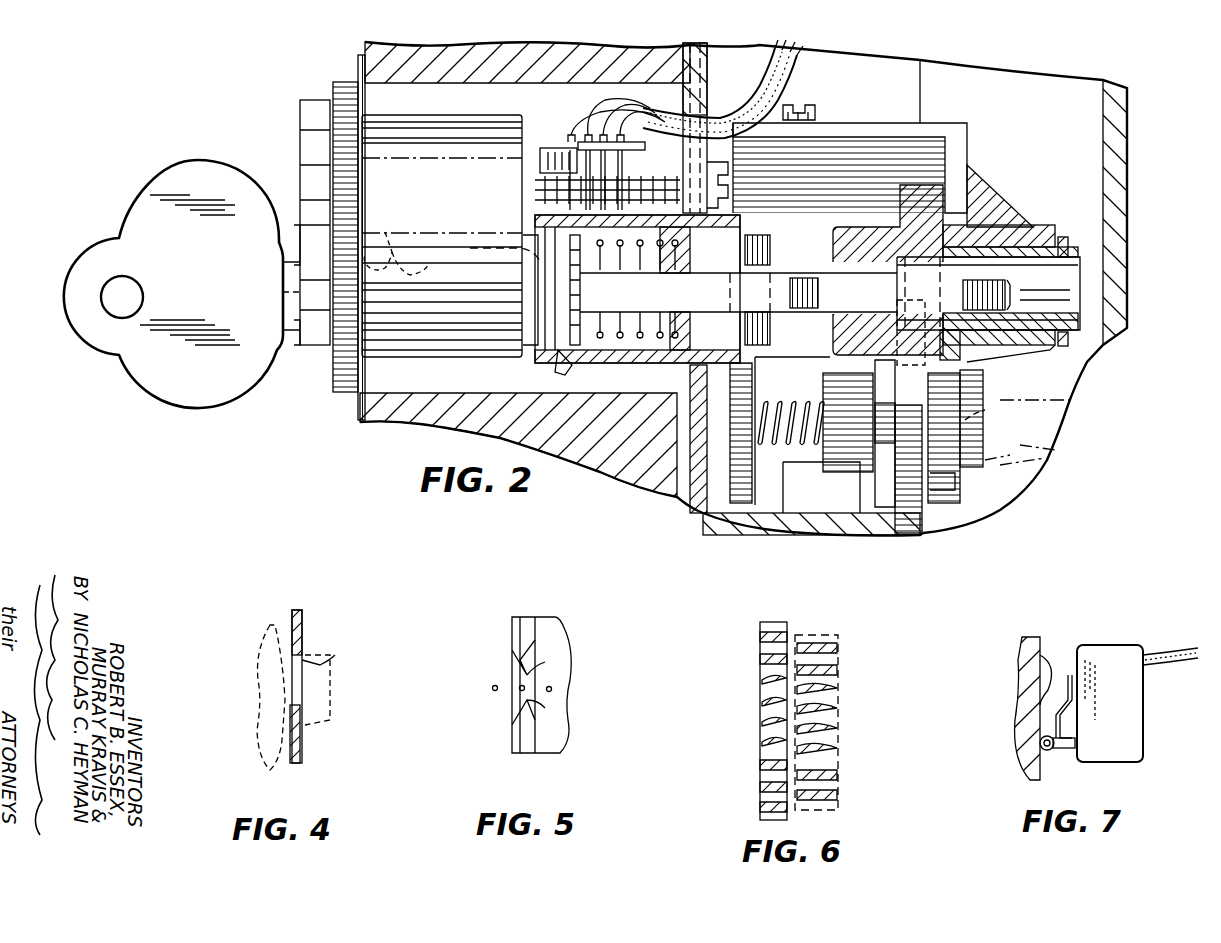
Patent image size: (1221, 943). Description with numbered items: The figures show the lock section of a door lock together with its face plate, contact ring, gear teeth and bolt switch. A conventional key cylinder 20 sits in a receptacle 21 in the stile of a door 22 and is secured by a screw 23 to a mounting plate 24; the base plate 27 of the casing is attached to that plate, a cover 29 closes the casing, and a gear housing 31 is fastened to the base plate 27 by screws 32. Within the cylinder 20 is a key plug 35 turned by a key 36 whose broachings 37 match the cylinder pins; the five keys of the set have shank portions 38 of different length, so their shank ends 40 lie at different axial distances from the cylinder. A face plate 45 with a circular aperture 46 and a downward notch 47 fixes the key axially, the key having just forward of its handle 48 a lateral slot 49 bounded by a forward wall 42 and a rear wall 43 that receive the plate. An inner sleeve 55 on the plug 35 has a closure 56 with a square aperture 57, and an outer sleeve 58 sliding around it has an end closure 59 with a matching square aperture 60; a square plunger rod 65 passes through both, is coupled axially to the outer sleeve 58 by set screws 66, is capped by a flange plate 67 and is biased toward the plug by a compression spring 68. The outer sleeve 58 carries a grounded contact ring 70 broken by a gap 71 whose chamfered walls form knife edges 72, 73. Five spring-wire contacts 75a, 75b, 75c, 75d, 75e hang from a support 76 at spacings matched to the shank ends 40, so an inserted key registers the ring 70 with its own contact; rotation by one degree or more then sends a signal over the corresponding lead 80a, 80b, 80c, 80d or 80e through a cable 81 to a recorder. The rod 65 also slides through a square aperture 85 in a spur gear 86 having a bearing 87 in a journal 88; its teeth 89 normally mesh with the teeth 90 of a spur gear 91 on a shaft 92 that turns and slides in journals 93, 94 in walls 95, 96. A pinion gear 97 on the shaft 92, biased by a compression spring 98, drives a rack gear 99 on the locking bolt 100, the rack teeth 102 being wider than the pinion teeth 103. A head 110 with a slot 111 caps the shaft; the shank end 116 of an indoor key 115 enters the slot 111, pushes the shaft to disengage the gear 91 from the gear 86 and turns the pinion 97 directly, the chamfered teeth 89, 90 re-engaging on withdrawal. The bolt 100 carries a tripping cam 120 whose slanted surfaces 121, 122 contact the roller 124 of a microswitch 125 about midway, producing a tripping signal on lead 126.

In FIG. 2, the key cylinder 20 is at (442, 200).
In FIG. 2, the receptacle 21 is at (412, 389).
In FIG. 2, the door 22 is at (400, 425).
In FIG. 2, the screw 23 is at (718, 180).
In FIG. 2, the mounting plate 24 is at (710, 62).
In FIG. 2, the base plate 27 is at (800, 68).
In FIG. 2, the cover 29 is at (1128, 190).
In FIG. 2, the gear housing 31 is at (967, 125).
In FIG. 2, the screws 32 is at (815, 112).
In FIG. 2, the key plug 35 is at (540, 360).
In FIG. 2, the key 36 is at (182, 304).
In FIG. 4, the key 36 is at (255, 738).
In FIG. 2, the broachings 37 is at (392, 235).
In FIG. 2, the shank portions 38 is at (490, 248).
In FIG. 2, the shank ends 40 is at (555, 372).
In FIG. 4, the forward wall 42 is at (302, 740).
In FIG. 4, the rear wall 43 is at (290, 765).
In FIG. 2, the face plate 45 is at (312, 137).
In FIG. 4, the face plate 45 is at (302, 630).
In FIG. 4, the circular aperture 46 is at (335, 646).
In FIG. 4, the notch 47 is at (292, 710).
In FIG. 2, the handle 48 is at (190, 190).
In FIG. 4, the handle 48 is at (258, 700).
In FIG. 2, the slot 49 is at (312, 345).
In FIG. 4, the slot 49 is at (330, 692).
In FIG. 2, the inner sleeve 55 is at (608, 363).
In FIG. 2, the closure 56 is at (693, 264).
In FIG. 2, the square aperture 57 is at (698, 330).
In FIG. 2, the outer sleeve 58 is at (655, 363).
In FIG. 5, the outer sleeve 58 is at (555, 628).
In FIG. 2, the end closure 59 is at (752, 268).
In FIG. 2, the square aperture 60 is at (760, 318).
In FIG. 2, the plunger rod 65 is at (882, 306).
In FIG. 2, the set screws 66 is at (770, 240).
In FIG. 2, the flange plate 67 is at (545, 284).
In FIG. 2, the compression spring 68 is at (635, 363).
In FIG. 2, the contact ring 70 is at (545, 228).
In FIG. 5, the contact ring 70 is at (527, 620).
In FIG. 5, the gap 71 is at (512, 672).
In FIG. 5, the knife edge 72 is at (551, 656).
In FIG. 5, the knife edge 73 is at (541, 715).
In FIG. 2, the fixed electrical contact 75a is at (540, 185).
In FIG. 5, the fixed electrical contact 75a is at (492, 688).
In FIG. 2, the fixed electrical contact 75b is at (555, 213).
In FIG. 5, the fixed electrical contact 75b is at (519, 690).
In FIG. 2, the fixed electrical contact 75c is at (608, 289).
In FIG. 5, the fixed electrical contact 75c is at (553, 690).
In FIG. 2, the fixed electrical contact 75d is at (643, 289).
In FIG. 2, the fixed electrical contact 75e is at (681, 289).
In FIG. 2, the support 76 is at (538, 167).
In FIG. 2, the lead 80a is at (572, 115).
In FIG. 2, the lead 80b is at (612, 115).
In FIG. 2, the lead 80c is at (638, 112).
In FIG. 2, the lead 80d is at (660, 115).
In FIG. 2, the lead 80e is at (634, 152).
In FIG. 2, the cable 81 is at (795, 96).
In FIG. 2, the square aperture 85 is at (840, 278).
In FIG. 2, the spur gear 86 is at (945, 225).
In FIG. 6, the spur gear 86 is at (840, 662).
In FIG. 2, the bearing 87 is at (1048, 255).
In FIG. 2, the journal 88 is at (1020, 240).
In FIG. 2, the teeth 89 is at (925, 192).
In FIG. 6, the teeth 89 is at (838, 700).
In FIG. 2, the teeth 90 is at (915, 455).
In FIG. 6, the teeth 90 is at (775, 692).
In FIG. 2, the spur gear 91 is at (912, 535).
In FIG. 6, the spur gear 91 is at (760, 665).
In FIG. 2, the shaft 92 is at (883, 375).
In FIG. 2, the journal 93 is at (757, 382).
In FIG. 2, the journal 94 is at (958, 490).
In FIG. 2, the wall 95 is at (745, 505).
In FIG. 2, the wall 96 is at (955, 505).
In FIG. 2, the pinion gear 97 is at (838, 390).
In FIG. 2, the compression spring 98 is at (797, 400).
In FIG. 2, the rack gear 99 is at (852, 470).
In FIG. 2, the locking bolt 100 is at (785, 522).
In FIG. 7, the locking bolt 100 is at (1035, 635).
In FIG. 2, the teeth 102 is at (800, 475).
In FIG. 2, the teeth 103 is at (870, 505).
In FIG. 2, the head 110 is at (1037, 387).
In FIG. 2, the slot 111 is at (960, 478).
In FIG. 2, the indoor key 115 is at (1050, 452).
In FIG. 2, the shank end 116 is at (988, 417).
In FIG. 7, the tripping cam 120 is at (1072, 680).
In FIG. 7, the camming surface 121 is at (1040, 710).
In FIG. 7, the camming surface 122 is at (1050, 660).
In FIG. 7, the roller 124 is at (1050, 752).
In FIG. 7, the microswitch 125 is at (1128, 645).
In FIG. 7, the lead 126 is at (1172, 648).